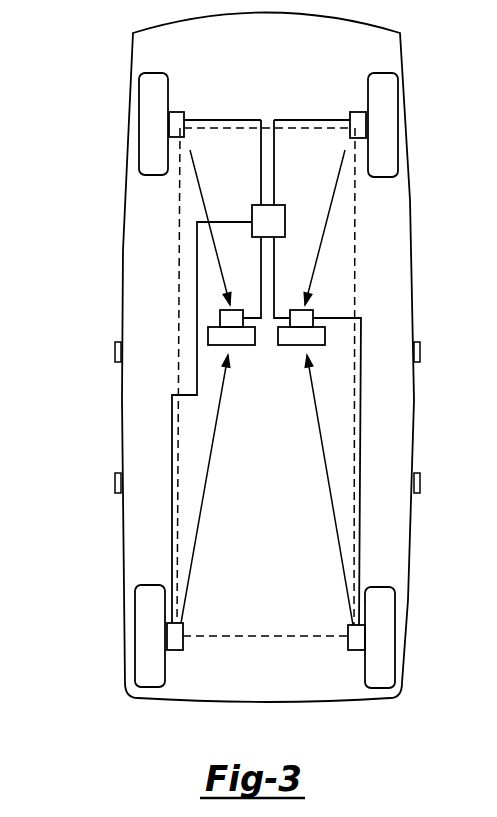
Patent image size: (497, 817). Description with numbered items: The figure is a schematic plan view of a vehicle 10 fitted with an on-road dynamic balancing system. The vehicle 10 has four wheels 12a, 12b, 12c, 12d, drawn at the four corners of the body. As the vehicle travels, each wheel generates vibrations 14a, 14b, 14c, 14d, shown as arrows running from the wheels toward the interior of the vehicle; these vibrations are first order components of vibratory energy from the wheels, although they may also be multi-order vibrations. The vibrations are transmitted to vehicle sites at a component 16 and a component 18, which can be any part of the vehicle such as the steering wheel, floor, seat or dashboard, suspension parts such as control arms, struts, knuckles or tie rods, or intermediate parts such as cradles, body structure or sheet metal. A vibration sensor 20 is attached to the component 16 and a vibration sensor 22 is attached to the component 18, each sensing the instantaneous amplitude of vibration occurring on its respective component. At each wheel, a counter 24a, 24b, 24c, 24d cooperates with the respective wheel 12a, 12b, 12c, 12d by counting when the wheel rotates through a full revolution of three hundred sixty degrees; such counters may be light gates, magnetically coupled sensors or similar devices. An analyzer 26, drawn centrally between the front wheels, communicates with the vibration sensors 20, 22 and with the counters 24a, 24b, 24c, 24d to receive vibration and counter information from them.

The vehicle 10 is at (418, 726).
The wheel 12a is at (398, 110).
The wheel 12b is at (138, 125).
The wheel 12c is at (395, 633).
The wheel 12d is at (137, 608).
The vibrations 14a is at (327, 222).
The vibrations 14b is at (200, 193).
The vibrations 14c is at (327, 470).
The vibrations 14d is at (207, 465).
The component 16 is at (243, 345).
The component 18 is at (293, 345).
The vibration sensor 20 is at (220, 315).
The vibration sensor 22 is at (313, 306).
The counter 24a is at (360, 112).
The counter 24b is at (177, 112).
The counter 24c is at (357, 650).
The counter 24d is at (177, 650).
The analyzer 26 is at (285, 222).